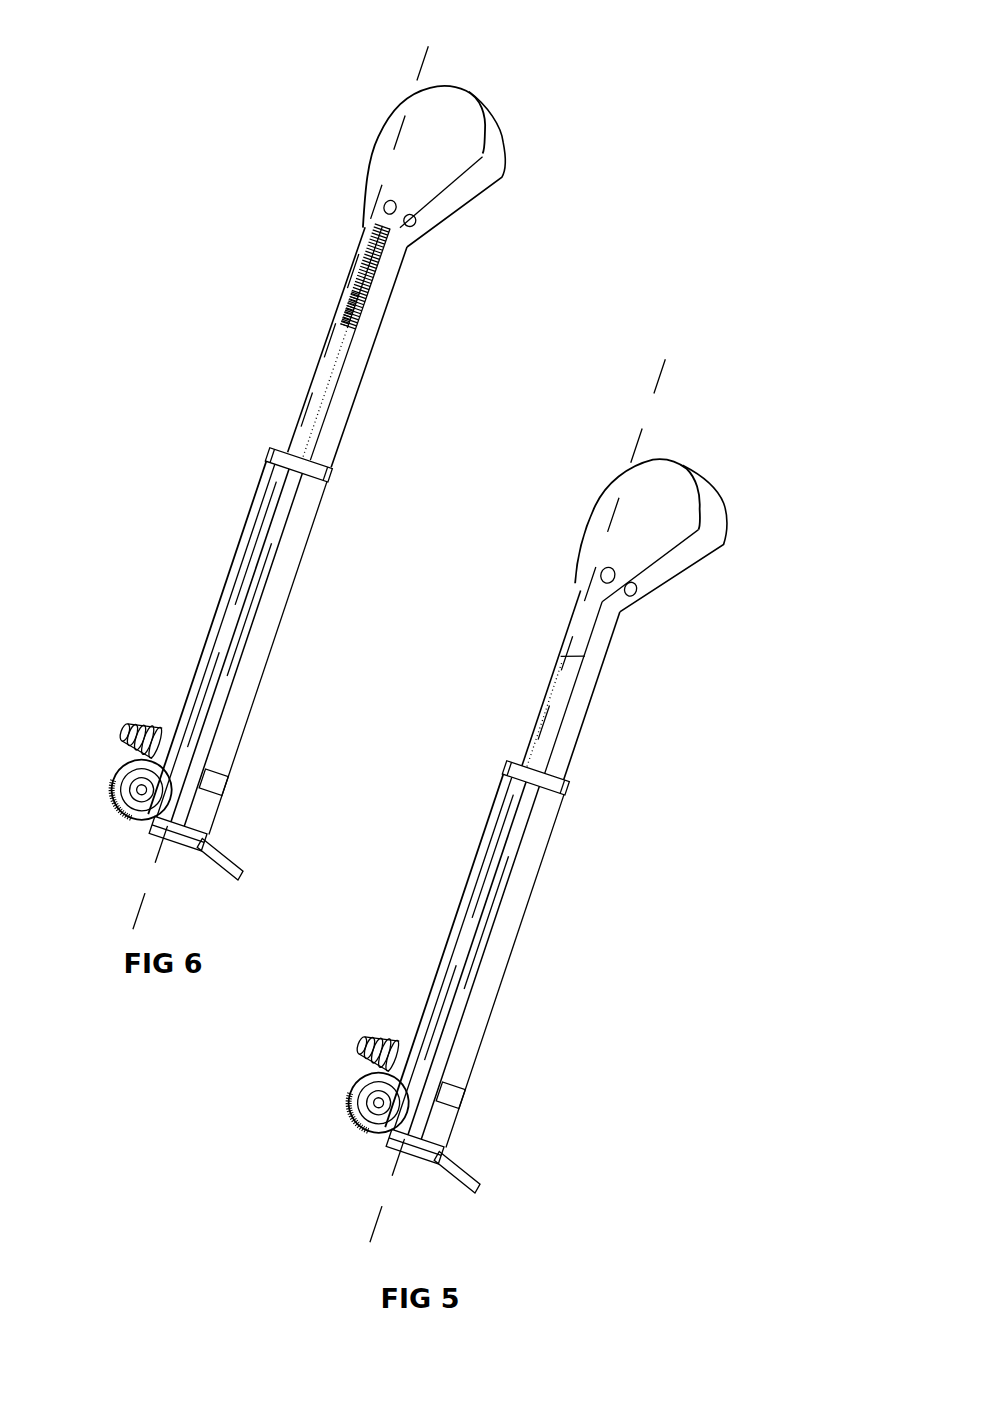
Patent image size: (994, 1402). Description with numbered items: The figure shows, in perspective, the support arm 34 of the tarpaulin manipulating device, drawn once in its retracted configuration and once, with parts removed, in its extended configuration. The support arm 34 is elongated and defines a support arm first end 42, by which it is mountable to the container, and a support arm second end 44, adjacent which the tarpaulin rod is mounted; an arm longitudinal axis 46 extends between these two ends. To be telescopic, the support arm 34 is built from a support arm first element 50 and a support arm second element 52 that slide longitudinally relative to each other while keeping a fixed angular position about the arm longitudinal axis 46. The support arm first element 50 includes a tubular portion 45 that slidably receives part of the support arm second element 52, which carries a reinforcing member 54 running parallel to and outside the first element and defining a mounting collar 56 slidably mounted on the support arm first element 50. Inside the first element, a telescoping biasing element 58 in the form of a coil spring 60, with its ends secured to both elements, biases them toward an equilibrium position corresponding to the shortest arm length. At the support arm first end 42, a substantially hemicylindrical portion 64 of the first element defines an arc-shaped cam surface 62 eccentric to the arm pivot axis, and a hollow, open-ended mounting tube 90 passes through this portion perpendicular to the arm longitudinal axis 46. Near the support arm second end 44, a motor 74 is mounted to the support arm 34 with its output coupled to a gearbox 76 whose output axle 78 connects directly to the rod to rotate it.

In FIG. 5, the support arm 34 is at (695, 732).
In FIG. 6, the support arm 34 is at (457, 421).
In FIG. 5, the support arm first end 42 is at (663, 455).
In FIG. 6, the support arm first end 42 is at (417, 85).
In FIG. 5, the support arm second end 44 is at (445, 1147).
In FIG. 6, the support arm second end 44 is at (207, 837).
In FIG. 5, the tubular portion 45 is at (548, 677).
In FIG. 6, the tubular portion 45 is at (350, 298).
In FIG. 5, the arm longitudinal axis 46 is at (378, 1223).
In FIG. 6, the arm longitudinal axis 46 is at (142, 907).
In FIG. 5, the support arm first element 50 is at (605, 675).
In FIG. 6, the support arm first element 50 is at (367, 355).
In FIG. 5, the support arm second element 52 is at (455, 1103).
In FIG. 6, the support arm second element 52 is at (230, 763).
In FIG. 5, the reinforcing member 54 is at (480, 852).
In FIG. 6, the reinforcing member 54 is at (245, 540).
In FIG. 5, the mounting collar 56 is at (567, 786).
In FIG. 6, the mounting collar 56 is at (332, 475).
In FIG. 6, the telescoping biasing element 58 is at (388, 277).
In FIG. 6, the coil spring 60 is at (365, 276).
In FIG. 5, the cam surface 62 is at (718, 497).
In FIG. 6, the cam surface 62 is at (498, 145).
In FIG. 5, the hemicylindrical portion 64 is at (663, 527).
In FIG. 6, the hemicylindrical portion 64 is at (440, 140).
In FIG. 5, the motor 74 is at (378, 1050).
In FIG. 6, the motor 74 is at (140, 735).
In FIG. 5, the gearbox 76 is at (372, 1113).
In FIG. 6, the gearbox 76 is at (135, 800).
In FIG. 5, the output axle 78 is at (450, 1175).
In FIG. 6, the output axle 78 is at (220, 862).
In FIG. 5, the mounting tube 90 is at (600, 567).
In FIG. 6, the mounting tube 90 is at (420, 223).